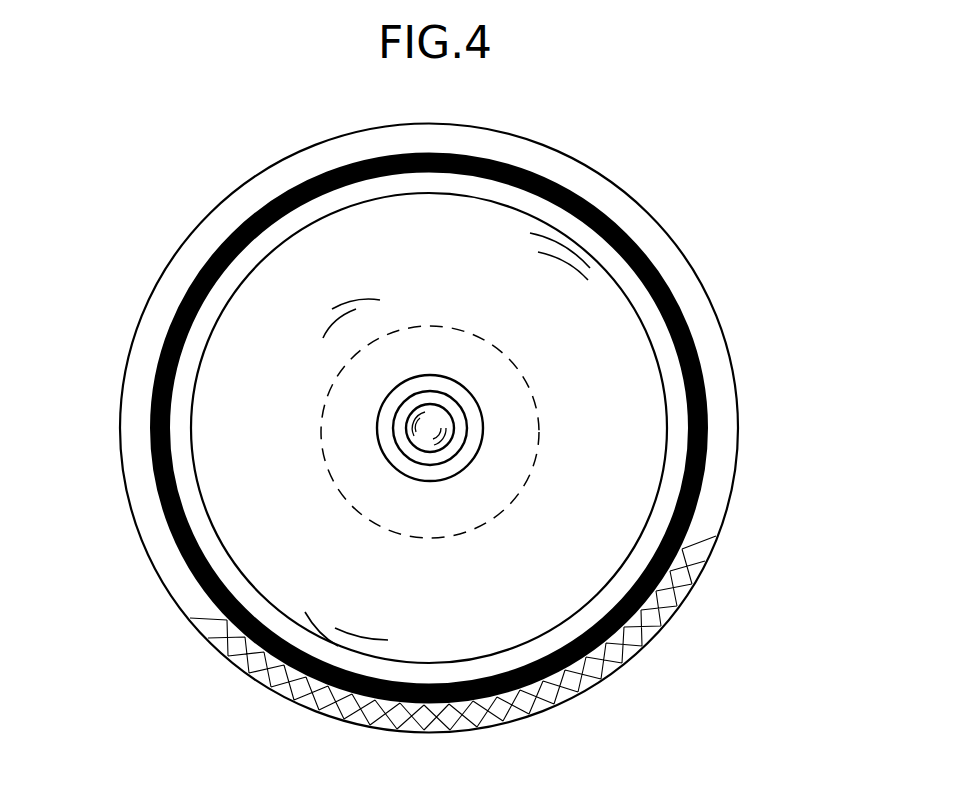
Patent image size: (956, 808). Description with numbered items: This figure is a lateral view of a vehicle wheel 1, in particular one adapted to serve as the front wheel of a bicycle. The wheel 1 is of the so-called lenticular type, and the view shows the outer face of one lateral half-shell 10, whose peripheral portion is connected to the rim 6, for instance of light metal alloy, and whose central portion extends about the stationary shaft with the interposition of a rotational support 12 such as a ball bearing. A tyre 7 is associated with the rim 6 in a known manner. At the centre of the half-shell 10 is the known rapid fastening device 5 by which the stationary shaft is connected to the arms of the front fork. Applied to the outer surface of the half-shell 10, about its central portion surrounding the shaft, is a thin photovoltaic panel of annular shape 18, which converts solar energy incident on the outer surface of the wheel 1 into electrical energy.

The vehicle wheel 1 is at (688, 177).
The rapid fastening device 5 is at (437, 415).
The rim 6 is at (208, 213).
The tyre 7 is at (588, 158).
The lateral half-shell 10 is at (196, 345).
The rotational support 12 is at (445, 453).
The photovoltaic panel of annular shape 18 is at (268, 465).